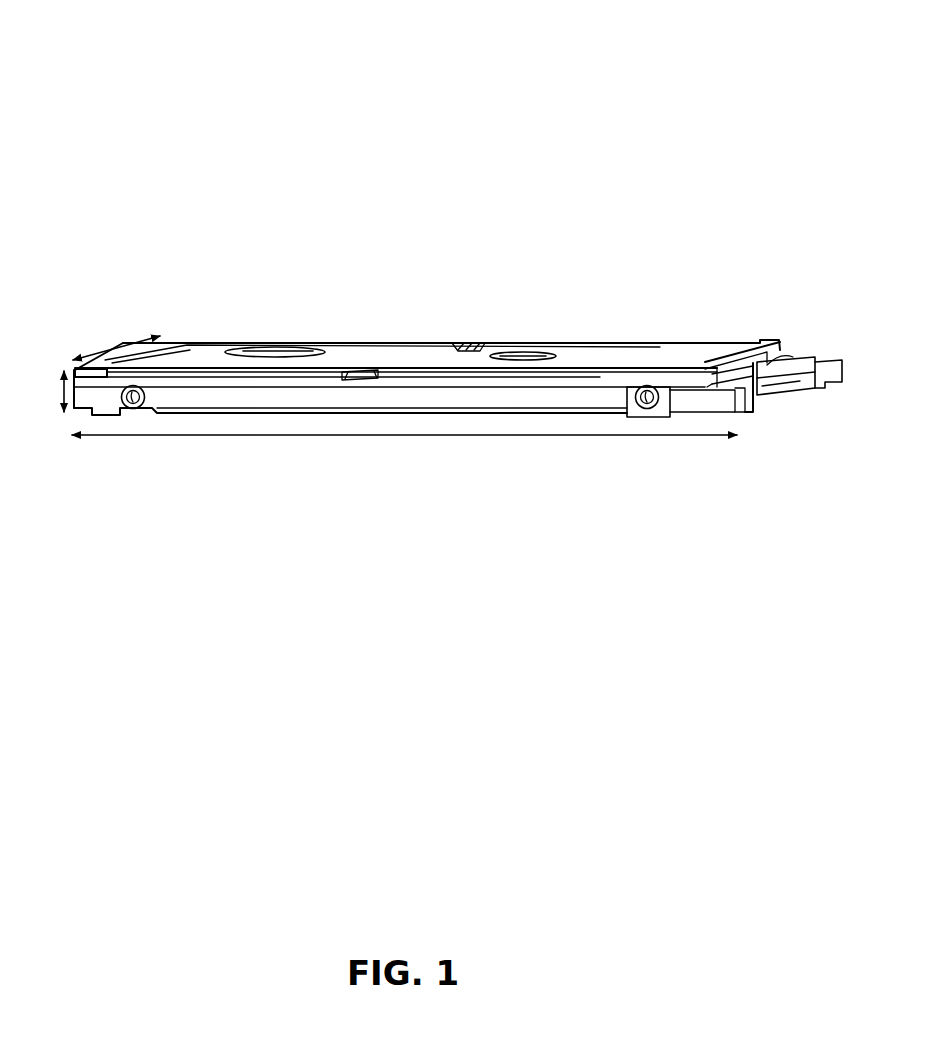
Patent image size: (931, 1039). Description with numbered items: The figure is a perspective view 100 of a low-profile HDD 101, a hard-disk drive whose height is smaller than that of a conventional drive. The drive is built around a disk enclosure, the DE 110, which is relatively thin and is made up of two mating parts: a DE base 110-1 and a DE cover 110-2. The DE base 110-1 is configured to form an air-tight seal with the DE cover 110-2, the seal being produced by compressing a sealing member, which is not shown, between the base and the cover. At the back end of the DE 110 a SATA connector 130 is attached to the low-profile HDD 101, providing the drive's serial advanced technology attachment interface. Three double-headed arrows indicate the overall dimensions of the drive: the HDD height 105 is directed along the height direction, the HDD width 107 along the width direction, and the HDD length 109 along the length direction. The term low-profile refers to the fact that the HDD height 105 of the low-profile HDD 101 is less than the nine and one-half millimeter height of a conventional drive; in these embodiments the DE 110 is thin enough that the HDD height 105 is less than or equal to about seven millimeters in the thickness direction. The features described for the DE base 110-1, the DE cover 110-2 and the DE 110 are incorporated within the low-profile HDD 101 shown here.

The perspective view 100 is at (133, 83).
The low-profile HDD 101 is at (608, 318).
The HDD height 105 is at (62, 372).
The HDD width 107 is at (112, 352).
The HDD length 109 is at (287, 436).
The disk enclosure 110 is at (423, 320).
The DE base 110-1 is at (242, 397).
The DE cover 110-2 is at (331, 361).
The SATA connector 130 is at (816, 350).